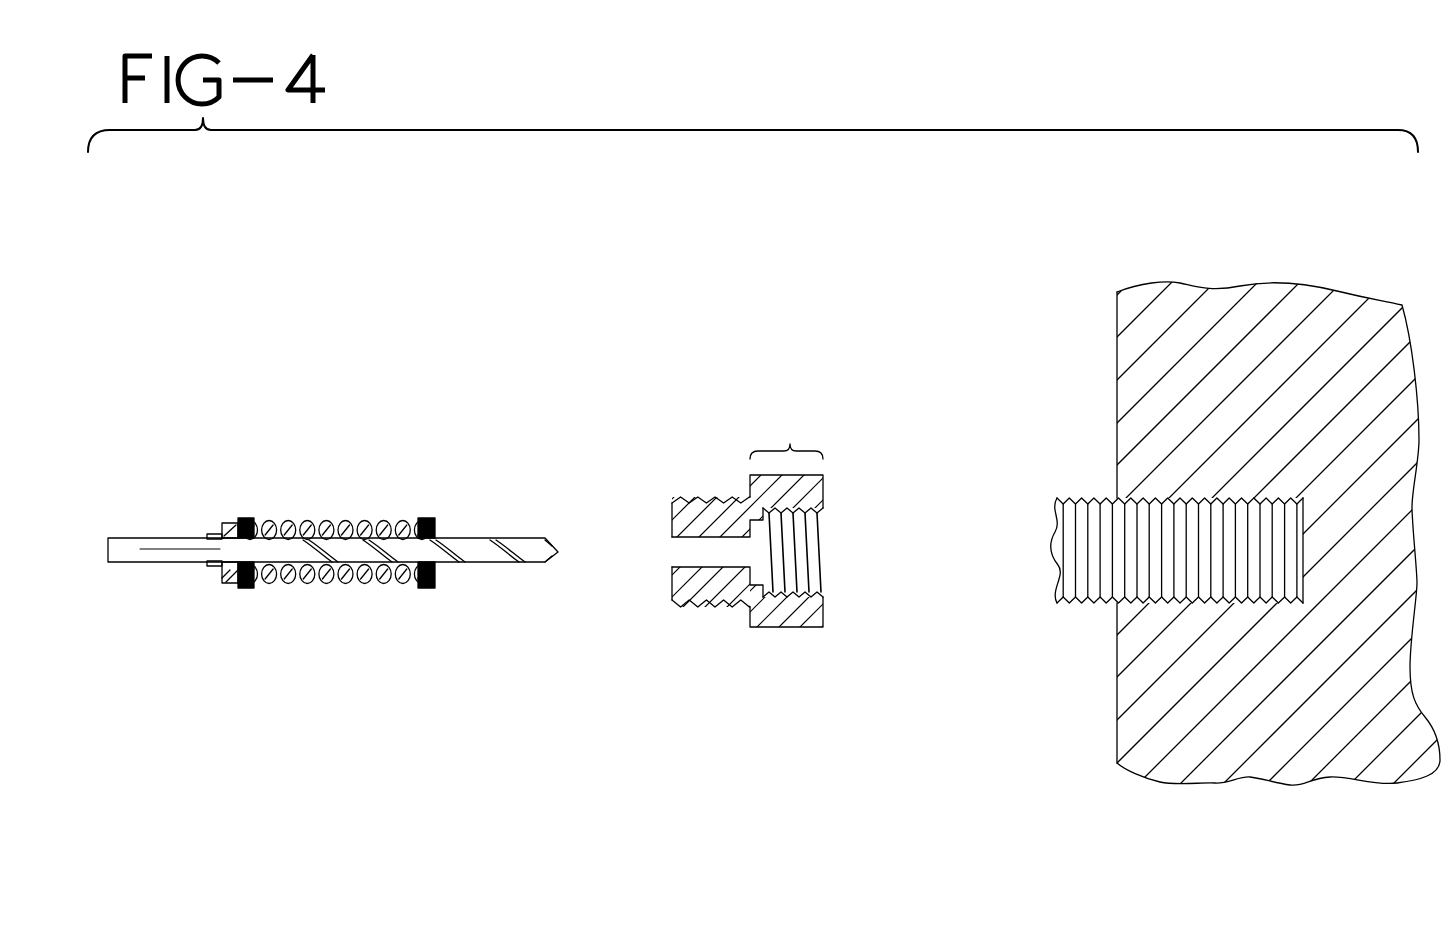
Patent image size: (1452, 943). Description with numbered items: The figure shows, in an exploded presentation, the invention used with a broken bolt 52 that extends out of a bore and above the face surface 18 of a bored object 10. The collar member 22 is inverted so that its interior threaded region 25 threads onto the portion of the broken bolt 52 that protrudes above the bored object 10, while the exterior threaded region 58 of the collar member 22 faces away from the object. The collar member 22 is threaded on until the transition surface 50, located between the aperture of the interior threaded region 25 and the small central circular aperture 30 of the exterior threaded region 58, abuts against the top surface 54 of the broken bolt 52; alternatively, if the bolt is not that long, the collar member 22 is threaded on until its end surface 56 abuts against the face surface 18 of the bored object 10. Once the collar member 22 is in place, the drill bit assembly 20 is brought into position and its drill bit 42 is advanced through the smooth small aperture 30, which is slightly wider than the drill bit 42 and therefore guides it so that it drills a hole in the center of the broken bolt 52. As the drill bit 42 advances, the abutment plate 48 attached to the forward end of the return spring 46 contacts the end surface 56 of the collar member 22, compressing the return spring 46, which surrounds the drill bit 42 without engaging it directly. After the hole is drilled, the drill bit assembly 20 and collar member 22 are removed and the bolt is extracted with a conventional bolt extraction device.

The object 10 is at (1280, 283).
The face surface 18 is at (1108, 702).
The drill bit assembly 20 is at (267, 506).
The collar member 22 is at (838, 600).
The interior threaded region 25 is at (790, 445).
The central circular aperture 30 is at (713, 553).
The drill bit 42 is at (493, 543).
The return spring 46 is at (347, 582).
The abutment plate 48 is at (438, 579).
The transition surface 50 is at (760, 573).
The broken bolt 52 is at (1135, 548).
The top surface 54 is at (1055, 520).
The end surface 56 is at (823, 490).
The external threaded portion 58 is at (672, 520).